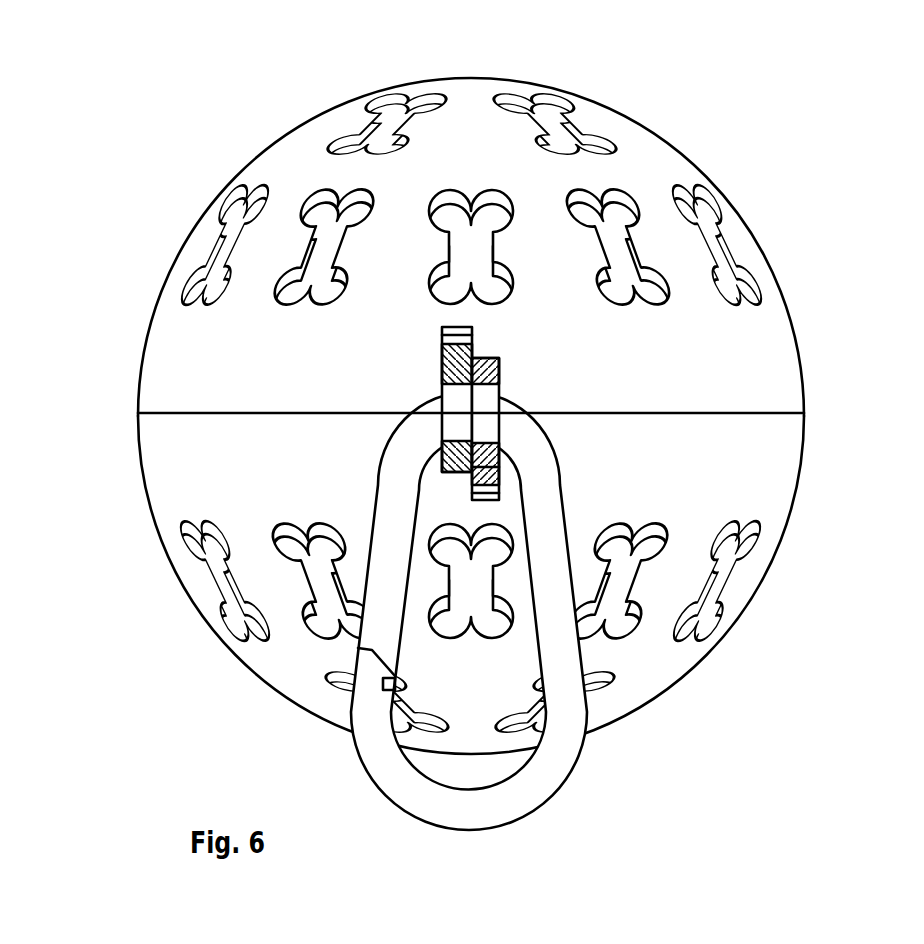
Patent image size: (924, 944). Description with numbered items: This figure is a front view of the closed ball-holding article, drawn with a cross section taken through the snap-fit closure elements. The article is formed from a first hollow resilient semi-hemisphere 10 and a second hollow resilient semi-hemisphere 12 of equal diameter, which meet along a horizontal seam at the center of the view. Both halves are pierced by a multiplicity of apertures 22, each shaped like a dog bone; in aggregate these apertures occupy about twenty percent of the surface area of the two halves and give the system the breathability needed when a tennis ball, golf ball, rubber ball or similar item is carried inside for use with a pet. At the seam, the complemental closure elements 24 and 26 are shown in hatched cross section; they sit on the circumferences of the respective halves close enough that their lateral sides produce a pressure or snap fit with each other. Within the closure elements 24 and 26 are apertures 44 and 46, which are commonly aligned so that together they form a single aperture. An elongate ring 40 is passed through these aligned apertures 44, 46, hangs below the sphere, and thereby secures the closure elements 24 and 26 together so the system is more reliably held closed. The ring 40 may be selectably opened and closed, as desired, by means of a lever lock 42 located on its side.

The first hollow resilient semi-hemisphere 10 is at (768, 465).
The second hollow resilient semi-hemisphere 12 is at (758, 359).
The apertures 22 is at (553, 137).
The closure element 24 is at (447, 382).
The closure element 26 is at (497, 378).
The elongate ring 40 is at (555, 762).
The lever lock 42 is at (398, 506).
The aperture 44 is at (443, 413).
The aperture 46 is at (455, 414).